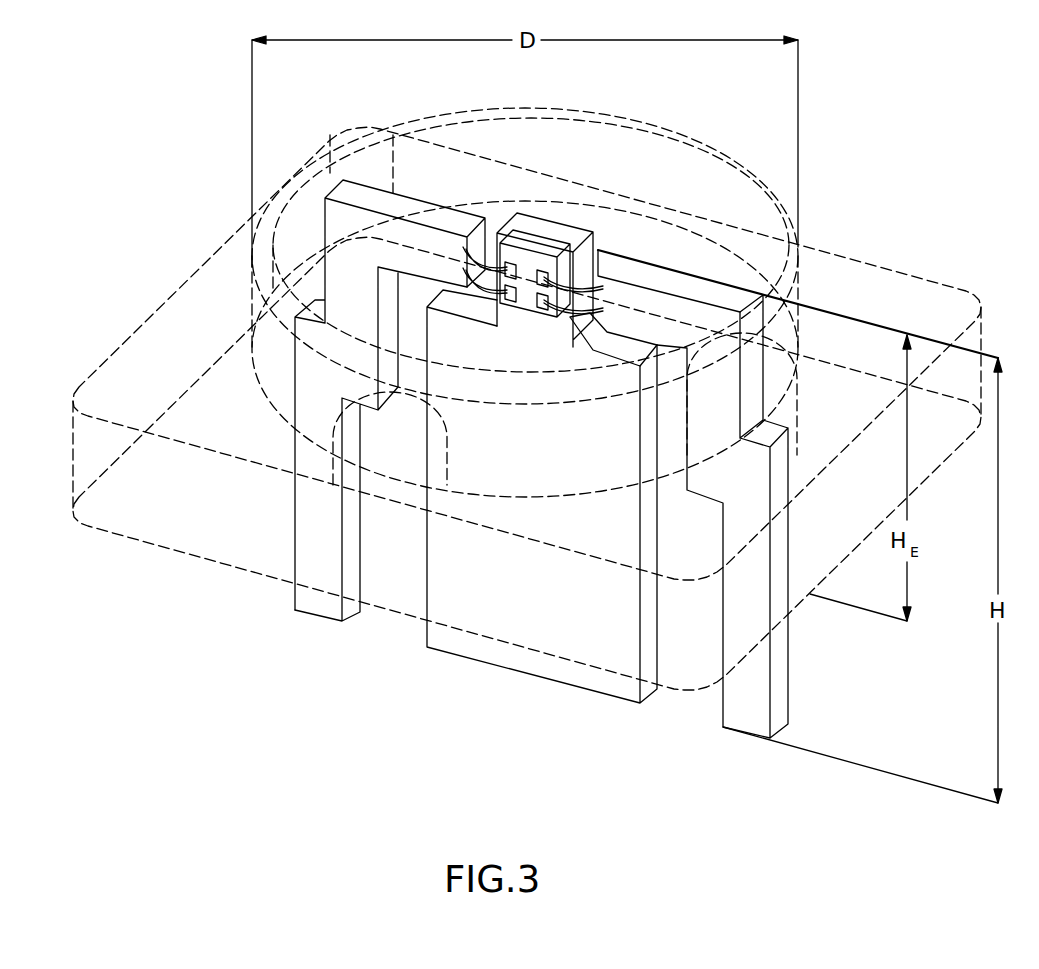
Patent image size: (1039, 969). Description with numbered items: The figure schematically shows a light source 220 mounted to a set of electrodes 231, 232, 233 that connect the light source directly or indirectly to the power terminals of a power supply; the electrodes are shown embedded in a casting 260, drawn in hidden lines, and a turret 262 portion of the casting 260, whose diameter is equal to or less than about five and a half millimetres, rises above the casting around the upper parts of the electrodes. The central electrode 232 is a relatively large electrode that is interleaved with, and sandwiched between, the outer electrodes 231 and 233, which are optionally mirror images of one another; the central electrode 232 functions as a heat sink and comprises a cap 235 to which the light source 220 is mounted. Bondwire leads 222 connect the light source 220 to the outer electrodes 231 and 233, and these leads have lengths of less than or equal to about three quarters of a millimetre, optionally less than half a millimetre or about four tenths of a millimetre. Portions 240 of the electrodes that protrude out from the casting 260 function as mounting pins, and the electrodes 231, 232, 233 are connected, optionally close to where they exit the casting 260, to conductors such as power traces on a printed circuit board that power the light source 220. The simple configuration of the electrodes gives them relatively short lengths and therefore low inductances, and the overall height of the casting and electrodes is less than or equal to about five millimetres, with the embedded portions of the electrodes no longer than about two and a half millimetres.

The light source 220 is at (548, 247).
The bondwire leads 222 is at (478, 262).
The outer electrode 231 is at (320, 603).
The central electrode 232 is at (540, 664).
The outer electrode 233 is at (738, 721).
The cap 235 is at (538, 235).
The protruding portions of the electrodes 240 is at (647, 642).
The casting 260 is at (193, 215).
The turret 262 is at (275, 378).